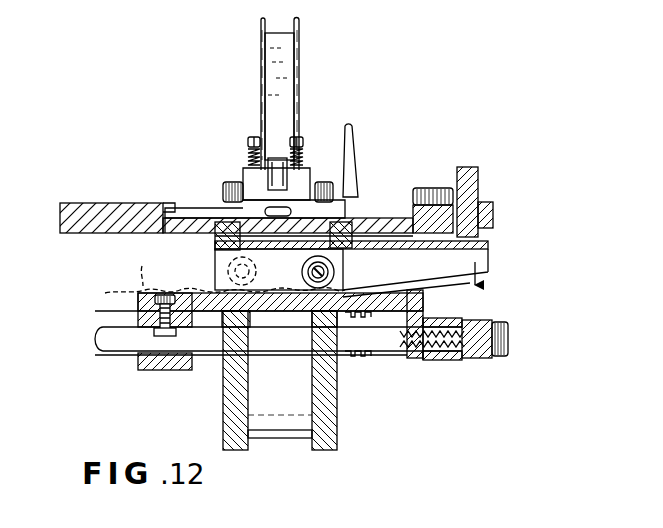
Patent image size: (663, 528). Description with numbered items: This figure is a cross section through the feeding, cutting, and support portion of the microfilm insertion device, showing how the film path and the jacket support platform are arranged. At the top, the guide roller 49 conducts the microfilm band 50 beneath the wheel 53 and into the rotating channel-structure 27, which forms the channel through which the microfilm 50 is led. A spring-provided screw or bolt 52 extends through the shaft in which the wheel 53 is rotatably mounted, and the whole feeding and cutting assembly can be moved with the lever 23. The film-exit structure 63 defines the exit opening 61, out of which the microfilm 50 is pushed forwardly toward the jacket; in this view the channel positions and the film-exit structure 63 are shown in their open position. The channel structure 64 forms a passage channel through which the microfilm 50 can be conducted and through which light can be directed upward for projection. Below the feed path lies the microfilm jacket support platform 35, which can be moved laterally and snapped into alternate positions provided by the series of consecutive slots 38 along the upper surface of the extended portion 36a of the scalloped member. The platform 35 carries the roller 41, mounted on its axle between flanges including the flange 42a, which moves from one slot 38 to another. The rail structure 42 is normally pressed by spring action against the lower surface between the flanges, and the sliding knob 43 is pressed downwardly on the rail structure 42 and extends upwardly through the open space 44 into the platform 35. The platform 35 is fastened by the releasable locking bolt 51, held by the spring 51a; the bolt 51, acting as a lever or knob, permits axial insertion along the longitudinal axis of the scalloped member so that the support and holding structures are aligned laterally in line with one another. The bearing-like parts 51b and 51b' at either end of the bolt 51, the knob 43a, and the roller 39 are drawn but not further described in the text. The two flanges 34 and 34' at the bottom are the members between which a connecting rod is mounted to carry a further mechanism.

The lever 23 is at (352, 162).
The channel-structure 27 is at (255, 186).
The flange 34 is at (311, 383).
The flange 34' is at (209, 380).
The microfilm jacket support platform 35 is at (91, 209).
The extended portion of the scalloped member 36a is at (246, 297).
The slots 38 is at (134, 267).
The roller 39 is at (335, 271).
The roller 41 is at (214, 268).
The rail structure 42 is at (491, 243).
The flange 42a is at (488, 266).
The sliding knob 43 is at (470, 181).
The knurled knob 43a is at (465, 178).
The open space 44 is at (484, 206).
The roller 49 is at (262, 42).
The microfilm 50 is at (283, 66).
The releasable locking bolt 51 is at (500, 325).
The spring 51a is at (352, 360).
The bearing block 51b is at (429, 347).
The bearing block 51b' is at (166, 348).
The screw or bolt 52 is at (306, 142).
The wheel 53 is at (278, 159).
The exit opening 61 is at (283, 211).
The film-exit structure 63 is at (215, 203).
The channel structure 64 is at (260, 270).